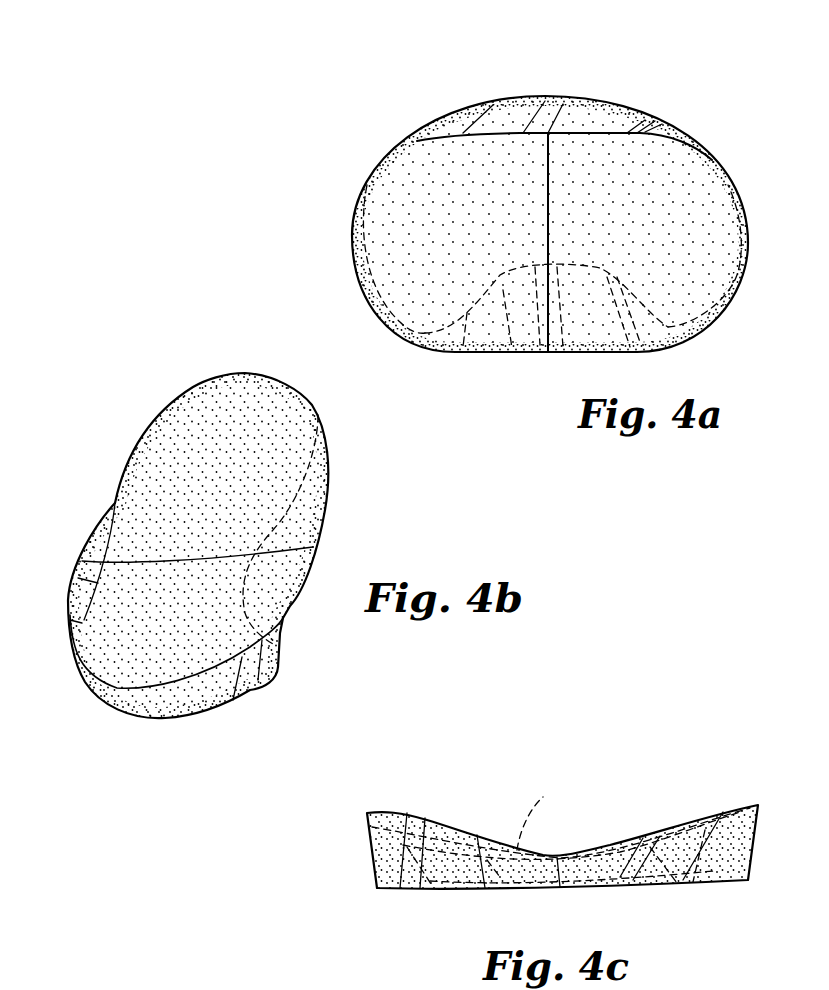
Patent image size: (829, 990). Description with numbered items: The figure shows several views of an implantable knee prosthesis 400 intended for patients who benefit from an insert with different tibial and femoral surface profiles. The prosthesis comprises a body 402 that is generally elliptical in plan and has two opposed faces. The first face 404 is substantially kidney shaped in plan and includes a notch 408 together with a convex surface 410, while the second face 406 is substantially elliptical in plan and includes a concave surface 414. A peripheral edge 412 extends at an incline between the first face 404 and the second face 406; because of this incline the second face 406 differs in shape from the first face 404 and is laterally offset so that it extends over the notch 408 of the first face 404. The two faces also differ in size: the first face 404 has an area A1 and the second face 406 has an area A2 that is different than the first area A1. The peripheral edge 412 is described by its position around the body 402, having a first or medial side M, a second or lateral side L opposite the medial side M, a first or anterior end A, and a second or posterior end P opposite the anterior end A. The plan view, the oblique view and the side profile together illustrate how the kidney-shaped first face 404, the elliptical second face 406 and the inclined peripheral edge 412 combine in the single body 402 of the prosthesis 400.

In FIG. 4A, the implantable knee prosthesis 400 is at (538, 209).
In FIG. 4B, the implantable knee prosthesis 400 is at (204, 535).
In FIG. 4C, the implantable knee prosthesis 400 is at (546, 834).
In FIG. 4A, the body 402 is at (716, 158).
In FIG. 4B, the body 402 is at (299, 388).
In FIG. 4C, the body 402 is at (362, 820).
In FIG. 4A, the first face 404 is at (697, 263).
In FIG. 4C, the first face 404 is at (668, 890).
In FIG. 4A, the second face 406 is at (421, 169).
In FIG. 4B, the second face 406 is at (215, 398).
In FIG. 4A, the notch 408 is at (510, 352).
In FIG. 4B, the notch 408 is at (273, 530).
In FIG. 4C, the convex surface 410 is at (535, 894).
In FIG. 4A, the peripheral edge 412 is at (541, 102).
In FIG. 4B, the peripheral edge 412 is at (100, 532).
In FIG. 4C, the peripheral edge 412 is at (372, 847).
In FIG. 4C, the concave surface 414 is at (545, 797).
In FIG. 4A, the area of first face A1 is at (457, 103).
In FIG. 4A, the area of second face A2 is at (591, 140).
In FIG. 4B, the anterior end A is at (312, 402).
In FIG. 4B, the medial side M is at (90, 567).
In FIG. 4B, the lateral side L is at (283, 626).
In FIG. 4B, the posterior end P is at (243, 690).